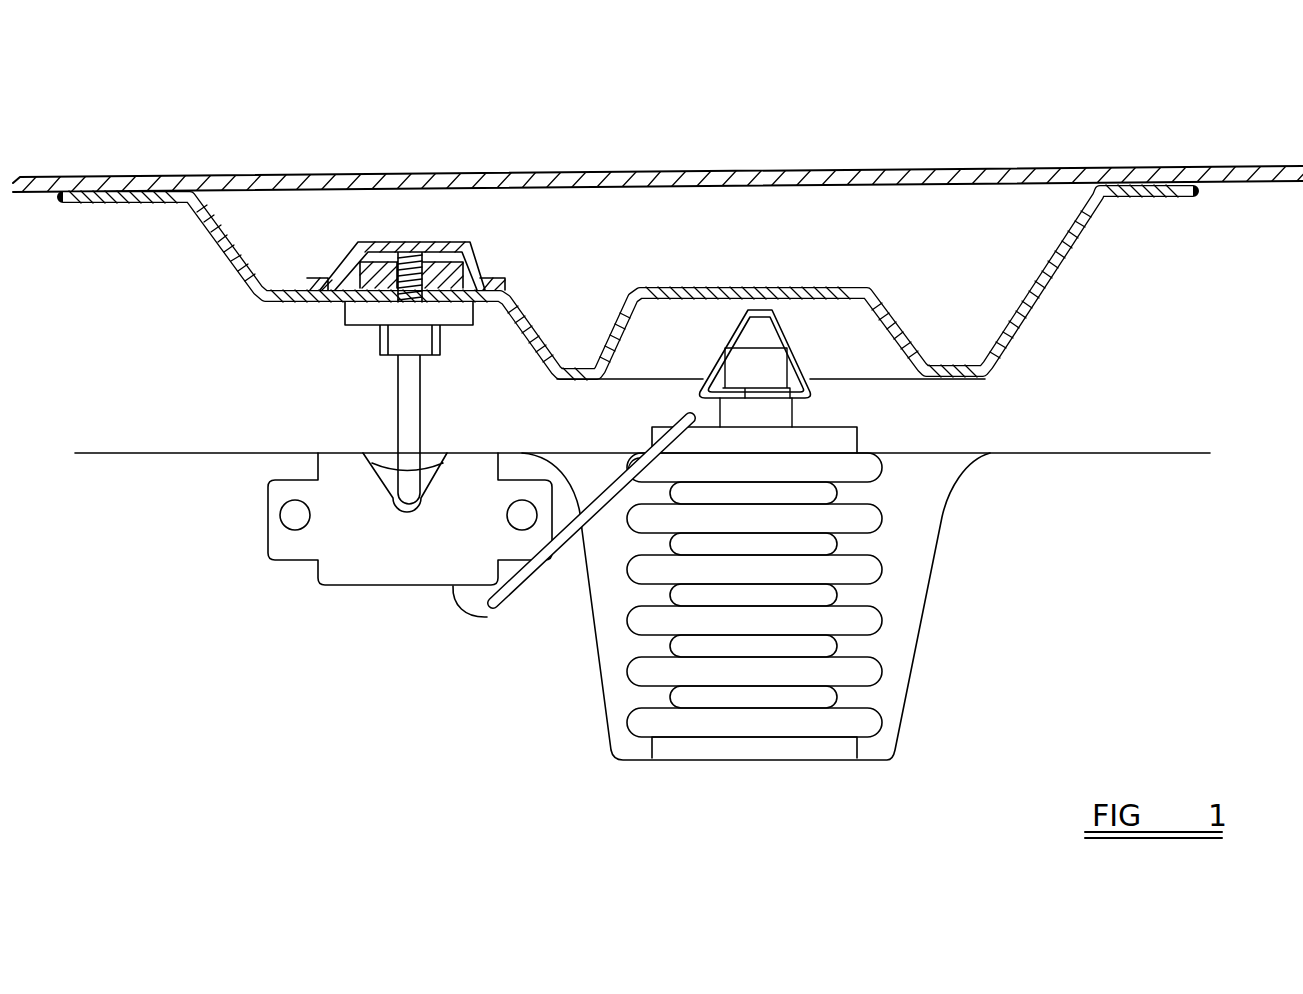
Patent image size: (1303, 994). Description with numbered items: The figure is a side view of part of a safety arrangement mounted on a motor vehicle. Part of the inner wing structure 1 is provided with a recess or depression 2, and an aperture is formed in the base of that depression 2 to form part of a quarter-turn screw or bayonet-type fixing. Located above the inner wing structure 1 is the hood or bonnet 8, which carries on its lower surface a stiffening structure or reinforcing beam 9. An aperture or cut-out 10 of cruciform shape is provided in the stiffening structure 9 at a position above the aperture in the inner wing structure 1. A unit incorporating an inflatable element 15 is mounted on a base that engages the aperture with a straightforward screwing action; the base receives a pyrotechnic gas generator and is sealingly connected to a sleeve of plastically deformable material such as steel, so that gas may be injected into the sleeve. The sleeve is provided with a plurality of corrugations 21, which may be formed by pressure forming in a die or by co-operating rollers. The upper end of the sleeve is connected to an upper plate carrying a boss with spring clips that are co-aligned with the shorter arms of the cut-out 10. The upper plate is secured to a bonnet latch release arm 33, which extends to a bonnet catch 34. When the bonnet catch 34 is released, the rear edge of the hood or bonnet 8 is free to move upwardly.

The inner wing structure 1 is at (1165, 455).
The recess or depression 2 is at (917, 660).
The hood or bonnet 8 is at (1017, 168).
The stiffening structure or reinforcing beam 9 is at (985, 354).
The aperture or cut-out 10 is at (762, 287).
The inflatable element 15 is at (747, 687).
The corrugations 21 is at (873, 572).
The bonnet latch release arm 33 is at (483, 617).
The bonnet catch 34 is at (413, 532).